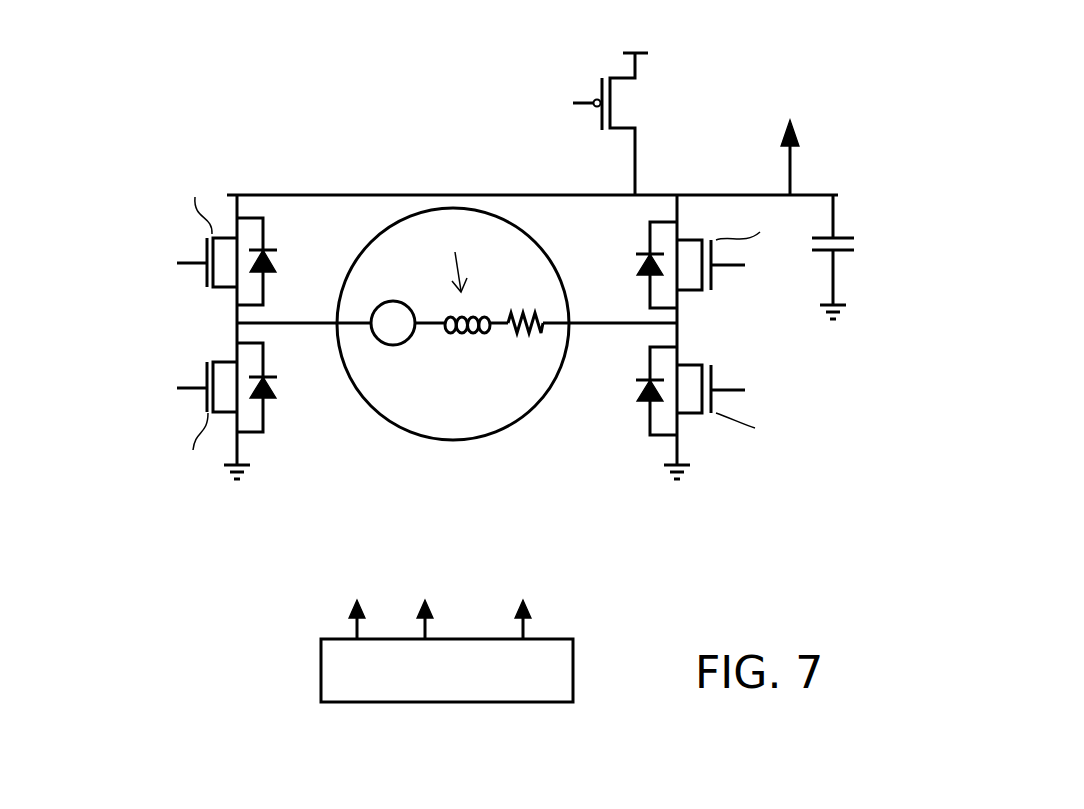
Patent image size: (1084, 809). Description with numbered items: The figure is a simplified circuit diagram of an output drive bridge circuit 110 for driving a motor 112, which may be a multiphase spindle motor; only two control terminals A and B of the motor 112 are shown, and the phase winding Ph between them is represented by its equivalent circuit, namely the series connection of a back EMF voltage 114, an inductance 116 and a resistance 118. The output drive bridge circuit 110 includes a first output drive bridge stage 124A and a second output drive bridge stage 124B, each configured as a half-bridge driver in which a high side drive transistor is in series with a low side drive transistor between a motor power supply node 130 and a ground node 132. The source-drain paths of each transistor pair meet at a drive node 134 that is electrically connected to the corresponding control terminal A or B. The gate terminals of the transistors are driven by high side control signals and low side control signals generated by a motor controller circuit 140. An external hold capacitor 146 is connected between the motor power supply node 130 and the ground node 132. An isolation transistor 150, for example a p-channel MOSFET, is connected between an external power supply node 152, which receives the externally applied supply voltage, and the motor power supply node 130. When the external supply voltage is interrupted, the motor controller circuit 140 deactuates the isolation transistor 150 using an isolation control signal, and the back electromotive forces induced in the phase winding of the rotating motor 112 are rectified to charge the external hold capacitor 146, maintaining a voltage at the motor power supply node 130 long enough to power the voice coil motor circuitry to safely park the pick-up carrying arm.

The output drive bridge circuit 110 is at (121, 196).
The motor 112 is at (493, 212).
The back EMF voltage 114 is at (387, 345).
The inductance 116 is at (465, 345).
The resistance 118 is at (525, 345).
The first output drive bridge stage 124A is at (163, 326).
The second output drive bridge stage 124B is at (717, 332).
The motor power supply node 130 is at (374, 195).
The ground node 132 is at (252, 473).
The drive node 134 is at (297, 323).
The motor controller circuit 140 is at (472, 702).
The external hold capacitor 146 is at (855, 243).
The isolation transistor 150 is at (610, 78).
The external power supply node 152 is at (648, 55).